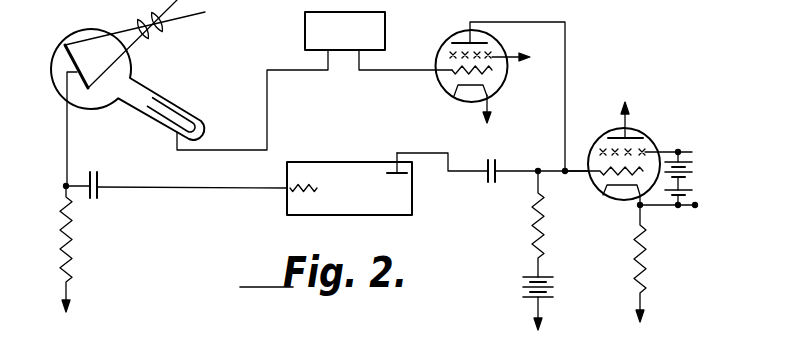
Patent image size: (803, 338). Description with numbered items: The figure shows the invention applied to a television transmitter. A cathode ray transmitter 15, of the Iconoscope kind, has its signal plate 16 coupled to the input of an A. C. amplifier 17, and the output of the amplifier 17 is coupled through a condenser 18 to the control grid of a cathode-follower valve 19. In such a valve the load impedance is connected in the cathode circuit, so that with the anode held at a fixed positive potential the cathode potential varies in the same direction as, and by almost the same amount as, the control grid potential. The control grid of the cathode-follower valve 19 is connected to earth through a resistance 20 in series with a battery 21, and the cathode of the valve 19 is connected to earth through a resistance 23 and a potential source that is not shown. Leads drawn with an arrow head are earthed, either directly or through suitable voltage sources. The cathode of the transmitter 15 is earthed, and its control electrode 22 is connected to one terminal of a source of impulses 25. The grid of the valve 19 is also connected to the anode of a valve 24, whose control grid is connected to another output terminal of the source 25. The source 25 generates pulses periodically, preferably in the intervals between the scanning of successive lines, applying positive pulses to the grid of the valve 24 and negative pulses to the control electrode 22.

The cathode ray transmitter 15 is at (107, 33).
The signal plate 16 is at (67, 58).
The A. C. amplifier 17 is at (355, 208).
The condenser 18 is at (485, 179).
The cathode-follower valve 19 is at (652, 142).
The resistance 20 is at (550, 240).
The battery 21 is at (550, 279).
The control electrode 22 is at (185, 115).
The resistance 23 is at (647, 282).
The valve 24 is at (502, 43).
The source of impulses 25 is at (378, 41).